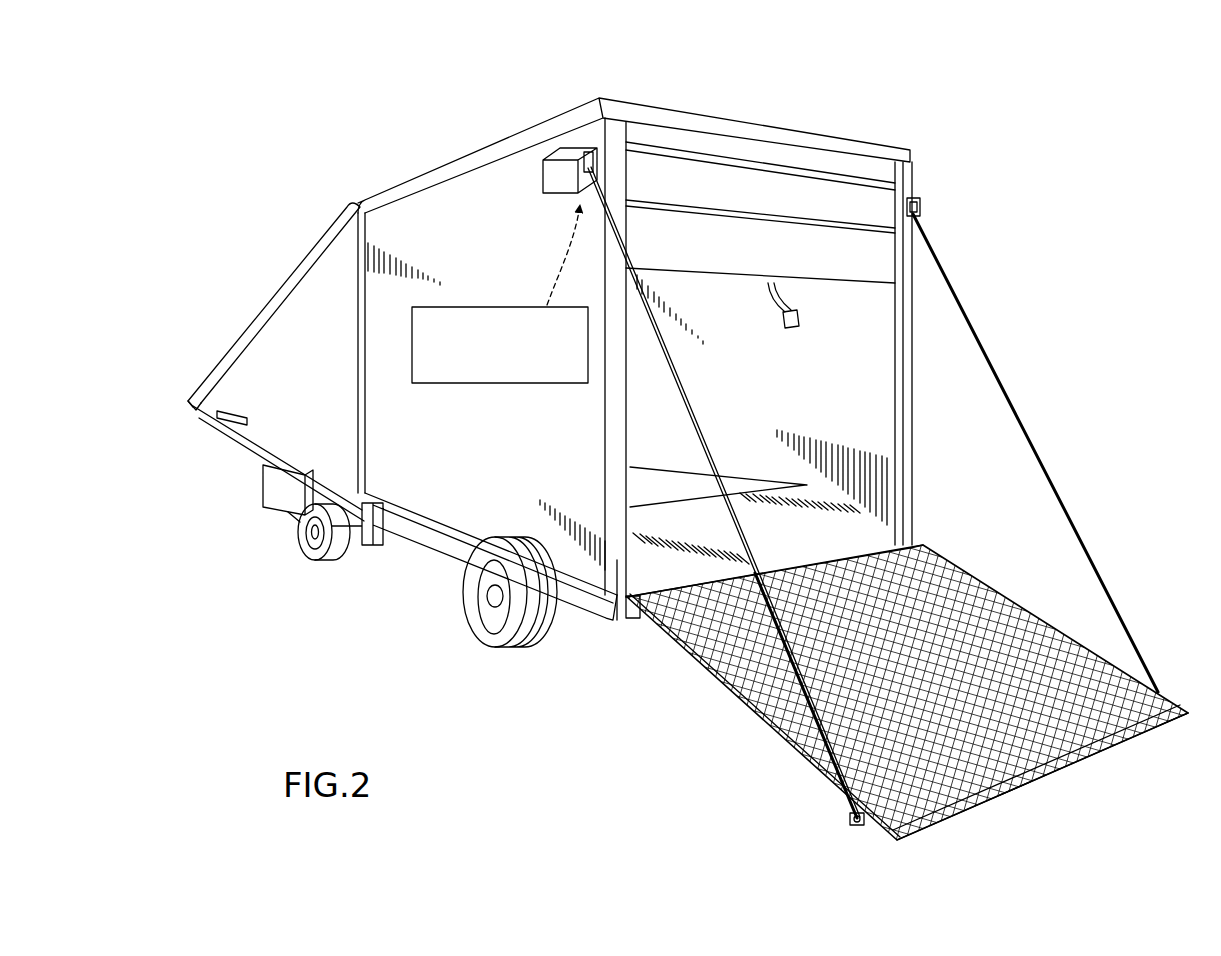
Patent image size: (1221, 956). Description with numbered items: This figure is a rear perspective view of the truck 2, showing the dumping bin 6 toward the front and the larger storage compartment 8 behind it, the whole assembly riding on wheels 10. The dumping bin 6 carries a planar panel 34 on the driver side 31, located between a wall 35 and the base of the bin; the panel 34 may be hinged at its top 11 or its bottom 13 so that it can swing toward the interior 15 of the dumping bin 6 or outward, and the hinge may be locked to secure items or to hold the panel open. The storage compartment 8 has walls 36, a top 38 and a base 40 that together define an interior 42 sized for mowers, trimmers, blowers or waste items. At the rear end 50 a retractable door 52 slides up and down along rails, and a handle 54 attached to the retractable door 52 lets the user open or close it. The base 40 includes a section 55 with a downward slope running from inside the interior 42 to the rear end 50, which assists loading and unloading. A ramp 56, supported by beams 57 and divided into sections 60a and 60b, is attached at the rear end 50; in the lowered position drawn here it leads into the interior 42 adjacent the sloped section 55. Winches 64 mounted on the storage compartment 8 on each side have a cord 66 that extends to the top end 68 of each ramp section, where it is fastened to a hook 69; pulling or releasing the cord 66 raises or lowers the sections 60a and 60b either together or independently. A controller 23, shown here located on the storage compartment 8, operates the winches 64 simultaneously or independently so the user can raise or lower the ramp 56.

The truck 2 is at (288, 208).
The dumping bin 6 is at (262, 304).
The storage compartment 8 is at (454, 158).
The wheels 10 is at (322, 558).
The top of panel 11 is at (285, 460).
The bottom of panel 13 is at (278, 508).
The interior of dumping bin 15 is at (240, 377).
The controller 23 is at (515, 383).
The driver side 31 is at (420, 452).
The panel 34 is at (265, 485).
The wall 35 is at (230, 437).
The walls 36 is at (425, 490).
The top 38 is at (750, 118).
The base 40 is at (602, 610).
The interior of storage compartment 42 is at (878, 437).
The rear end of storage compartment 50 is at (630, 612).
The retractable door 52 is at (895, 195).
The handle 54 is at (806, 318).
The section 55 is at (847, 530).
The ramp 56 is at (1005, 586).
The beams 57 is at (1120, 757).
The ramp section 60a is at (1017, 790).
The ramp section 60b is at (1170, 727).
The winch 64 is at (543, 176).
The cord 66 is at (682, 395).
The top end of section 68 is at (855, 826).
The hook 69 is at (852, 818).